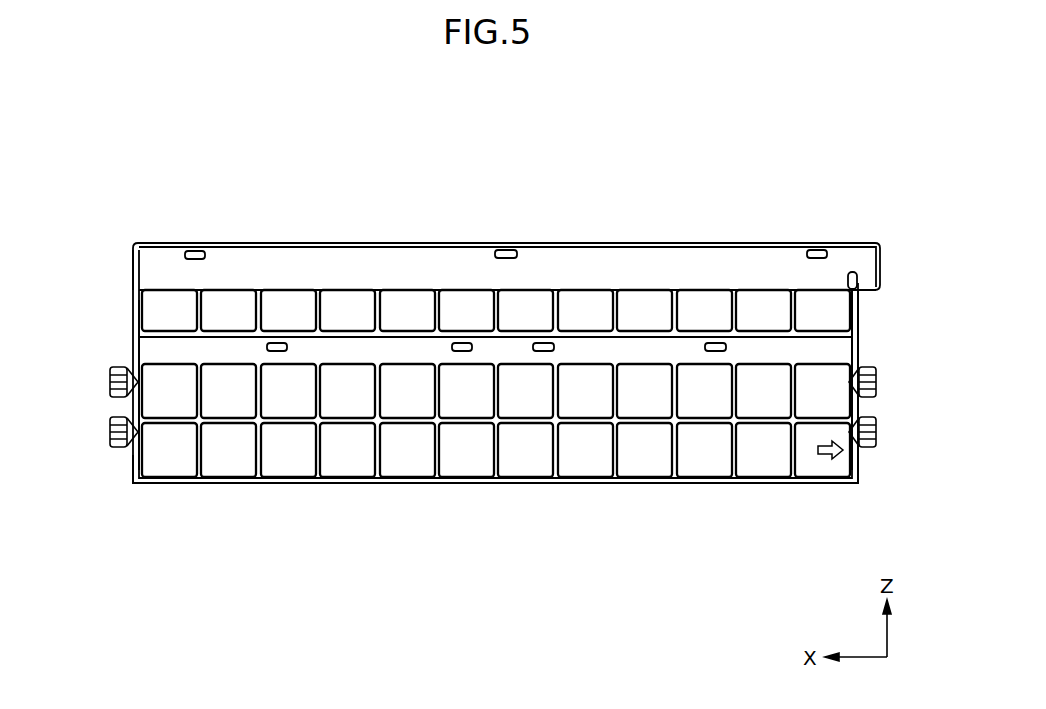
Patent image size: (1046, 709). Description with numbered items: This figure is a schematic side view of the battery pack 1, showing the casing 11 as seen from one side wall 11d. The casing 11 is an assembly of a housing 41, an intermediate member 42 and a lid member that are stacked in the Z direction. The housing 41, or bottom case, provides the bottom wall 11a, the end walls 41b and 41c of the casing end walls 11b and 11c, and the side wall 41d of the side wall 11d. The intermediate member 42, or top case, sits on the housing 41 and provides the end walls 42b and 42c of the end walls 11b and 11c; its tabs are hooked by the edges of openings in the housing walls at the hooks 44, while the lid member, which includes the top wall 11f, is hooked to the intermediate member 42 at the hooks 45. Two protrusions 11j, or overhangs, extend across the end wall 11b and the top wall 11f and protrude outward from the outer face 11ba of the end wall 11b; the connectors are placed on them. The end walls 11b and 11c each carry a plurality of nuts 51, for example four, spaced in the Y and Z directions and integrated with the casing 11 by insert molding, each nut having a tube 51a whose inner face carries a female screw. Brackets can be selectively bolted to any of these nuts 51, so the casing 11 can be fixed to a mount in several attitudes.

The battery pack 1 is at (176, 155).
The casing 11 is at (153, 241).
The intermediate member 42 is at (243, 243).
The end wall of the intermediate member 42c is at (133, 282).
The end wall of the intermediate member 42b is at (858, 310).
The end wall 11c is at (133, 313).
The side wall 11d is at (697, 257).
The top wall 11f is at (380, 243).
The hooks 45 is at (507, 231).
The protrusions 11j is at (880, 262).
The outer face of the end wall 11ba is at (858, 322).
The end wall 11b is at (855, 385).
The tube of the nut 51a is at (880, 372).
The nuts 51 is at (493, 407).
The end wall of the housing 41c is at (133, 473).
The end wall of the housing 41b is at (858, 470).
The side wall of the housing 41d is at (284, 463).
The bottom wall 11a is at (362, 483).
The housing 41 is at (495, 480).
The hooks 44 is at (538, 367).